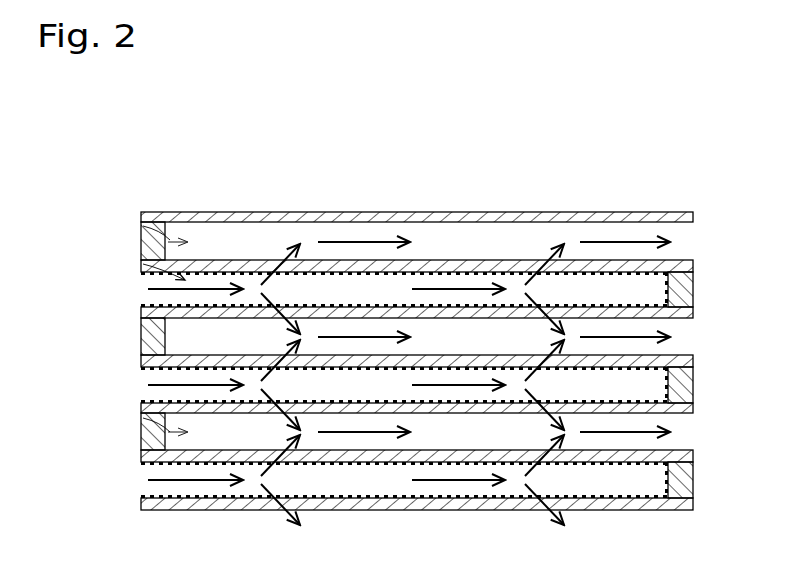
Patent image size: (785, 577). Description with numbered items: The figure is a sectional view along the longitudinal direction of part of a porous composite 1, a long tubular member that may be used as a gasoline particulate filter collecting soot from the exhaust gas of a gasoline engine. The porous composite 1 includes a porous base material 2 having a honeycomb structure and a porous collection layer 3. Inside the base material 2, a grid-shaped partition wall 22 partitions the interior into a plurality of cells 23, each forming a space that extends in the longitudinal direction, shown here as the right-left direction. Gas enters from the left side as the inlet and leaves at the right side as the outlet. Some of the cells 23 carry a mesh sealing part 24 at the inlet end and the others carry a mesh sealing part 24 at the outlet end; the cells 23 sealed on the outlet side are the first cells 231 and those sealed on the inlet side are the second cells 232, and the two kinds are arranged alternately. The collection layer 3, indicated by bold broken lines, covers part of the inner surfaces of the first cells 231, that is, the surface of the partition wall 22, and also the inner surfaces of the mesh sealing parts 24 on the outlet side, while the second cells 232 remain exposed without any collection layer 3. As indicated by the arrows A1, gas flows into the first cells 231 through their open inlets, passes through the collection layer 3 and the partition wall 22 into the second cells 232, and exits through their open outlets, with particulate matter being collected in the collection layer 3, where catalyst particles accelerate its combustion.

The porous composite 1 is at (68, 142).
The porous base material 2 is at (551, 160).
The partition wall 22 is at (475, 212).
The cells 23 is at (70, 240).
The first cells 231 is at (141, 265).
The second cells 232 is at (141, 227).
The mesh sealing part 24 is at (150, 345).
The porous collection layer 3 is at (150, 306).
The arrows A1 is at (280, 262).